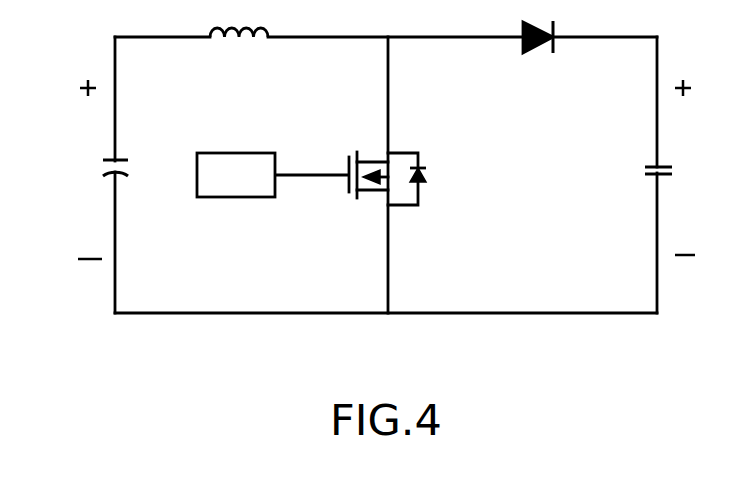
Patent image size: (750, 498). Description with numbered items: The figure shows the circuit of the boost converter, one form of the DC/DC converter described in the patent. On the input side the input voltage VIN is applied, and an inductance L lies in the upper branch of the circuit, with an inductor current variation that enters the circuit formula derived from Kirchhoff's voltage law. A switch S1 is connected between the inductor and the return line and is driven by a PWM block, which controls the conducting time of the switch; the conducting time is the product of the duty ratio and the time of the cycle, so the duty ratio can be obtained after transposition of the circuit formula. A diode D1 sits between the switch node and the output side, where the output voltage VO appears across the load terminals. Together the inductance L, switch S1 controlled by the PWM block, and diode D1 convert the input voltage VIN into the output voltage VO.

The inductance L is at (239, 50).
The diode D1 is at (533, 67).
The switch (MOSFET) S1 is at (368, 168).
The PWM controller PWM is at (273, 175).
The input voltage VIN is at (89, 169).
The output voltage VO is at (680, 167).